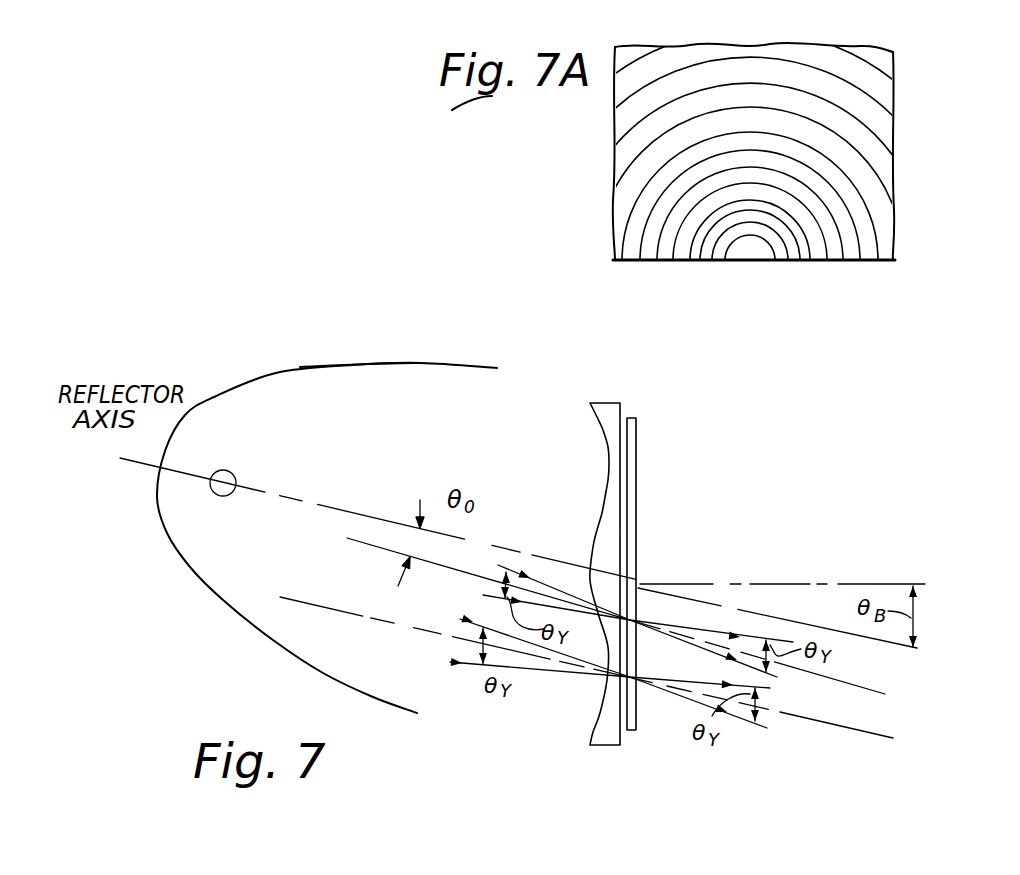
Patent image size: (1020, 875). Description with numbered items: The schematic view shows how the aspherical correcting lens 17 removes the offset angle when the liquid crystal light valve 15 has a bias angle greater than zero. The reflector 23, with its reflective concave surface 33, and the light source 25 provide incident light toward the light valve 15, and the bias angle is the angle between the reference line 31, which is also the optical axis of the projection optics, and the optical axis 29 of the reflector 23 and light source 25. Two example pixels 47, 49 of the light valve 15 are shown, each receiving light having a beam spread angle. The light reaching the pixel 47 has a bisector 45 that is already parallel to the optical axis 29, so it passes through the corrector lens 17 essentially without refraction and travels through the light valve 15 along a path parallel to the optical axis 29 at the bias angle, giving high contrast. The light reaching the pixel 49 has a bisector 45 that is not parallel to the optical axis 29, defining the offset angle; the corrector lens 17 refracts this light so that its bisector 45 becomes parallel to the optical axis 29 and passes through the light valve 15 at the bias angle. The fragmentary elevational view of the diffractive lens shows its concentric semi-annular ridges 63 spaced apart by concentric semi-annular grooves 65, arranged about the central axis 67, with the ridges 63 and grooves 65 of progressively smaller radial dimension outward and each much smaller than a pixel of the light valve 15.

In FIG. 7, the liquid crystal light valve 15 is at (628, 417).
In FIG. 7, the aspherical correcting lens 17 is at (607, 402).
In FIG. 7A, the aspherical correcting lens 17 is at (750, 181).
In FIG. 7, the reflector 23 is at (272, 378).
In FIG. 7, the light source 25 is at (216, 494).
In FIG. 7, the optical axis 29 is at (862, 643).
In FIG. 7, the reference line 31 is at (842, 582).
In FIG. 7, the reflective concave surface 33 is at (352, 368).
In FIG. 7, the bisector 45 is at (354, 541).
In FIG. 7, the pixel 47 is at (622, 682).
In FIG. 7, the pixel 49 is at (632, 615).
In FIG. 7A, the semi-annular ridges 63 is at (783, 262).
In FIG. 7A, the semi-annular grooves 65 is at (818, 261).
In FIG. 7A, the central axis 67 is at (686, 261).